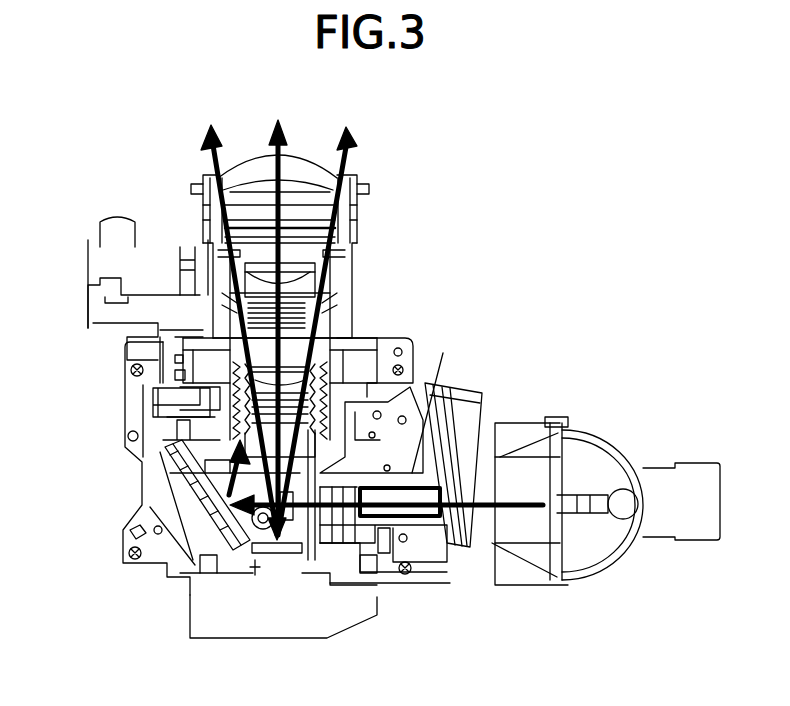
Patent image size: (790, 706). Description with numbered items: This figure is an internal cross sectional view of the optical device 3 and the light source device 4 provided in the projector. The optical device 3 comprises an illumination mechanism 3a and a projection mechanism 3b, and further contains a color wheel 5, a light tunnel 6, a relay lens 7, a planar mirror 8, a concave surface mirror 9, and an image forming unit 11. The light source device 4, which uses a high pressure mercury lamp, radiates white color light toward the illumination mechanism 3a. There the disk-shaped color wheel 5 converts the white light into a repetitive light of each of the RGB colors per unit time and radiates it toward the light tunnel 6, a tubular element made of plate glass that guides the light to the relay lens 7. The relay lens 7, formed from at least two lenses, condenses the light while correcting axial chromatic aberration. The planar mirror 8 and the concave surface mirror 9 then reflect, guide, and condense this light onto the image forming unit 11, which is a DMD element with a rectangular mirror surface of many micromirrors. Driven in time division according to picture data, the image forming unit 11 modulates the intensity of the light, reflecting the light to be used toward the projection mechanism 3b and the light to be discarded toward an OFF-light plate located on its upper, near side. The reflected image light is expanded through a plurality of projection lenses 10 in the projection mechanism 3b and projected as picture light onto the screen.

The optical device 3 is at (416, 322).
The illumination mechanism 3a is at (78, 342).
The projection mechanism 3b is at (373, 225).
The light source device 4 is at (586, 590).
The color wheel 5 is at (487, 430).
The light tunnel 6 is at (434, 520).
The relay lens 7 is at (348, 527).
The planar mirror 8 is at (237, 493).
The concave surface mirror 9 is at (203, 447).
The projection lens 10 is at (313, 155).
The image forming unit 11 is at (270, 556).